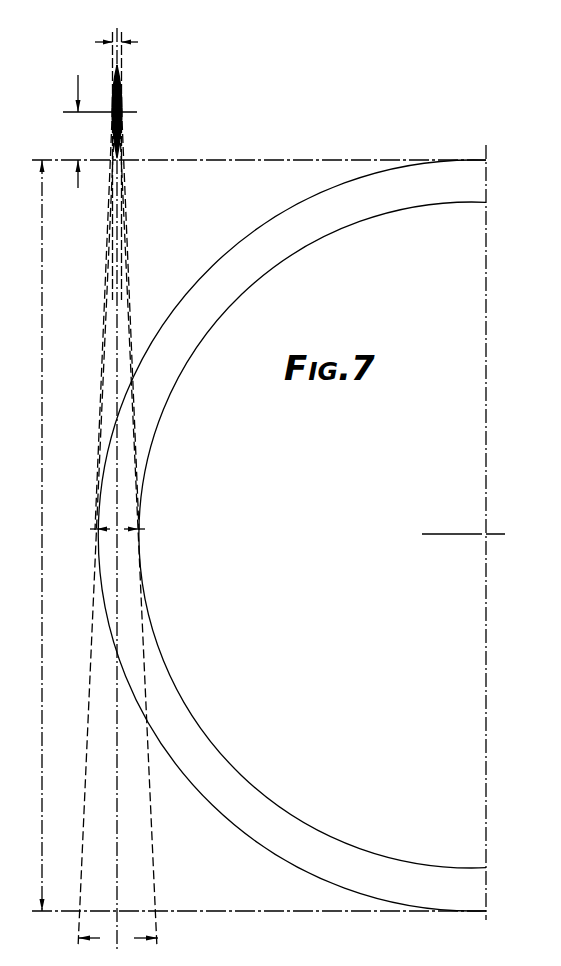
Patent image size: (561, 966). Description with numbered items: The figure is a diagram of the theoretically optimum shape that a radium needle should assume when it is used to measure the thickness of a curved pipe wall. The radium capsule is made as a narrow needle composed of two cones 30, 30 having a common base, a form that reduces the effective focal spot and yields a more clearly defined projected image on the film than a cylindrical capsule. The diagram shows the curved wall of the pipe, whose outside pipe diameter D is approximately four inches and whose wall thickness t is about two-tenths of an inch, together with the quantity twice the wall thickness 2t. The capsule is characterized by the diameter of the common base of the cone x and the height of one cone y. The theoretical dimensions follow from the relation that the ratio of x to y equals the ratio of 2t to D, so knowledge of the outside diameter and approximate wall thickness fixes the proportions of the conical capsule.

The cone 30 is at (120, 100).
The outside pipe diameter D is at (39, 535).
The wall thickness t is at (117, 529).
The twice wall thickness 2t is at (118, 938).
The diameter of common base of the cone x is at (108, 43).
The height of one cone y is at (100, 131).